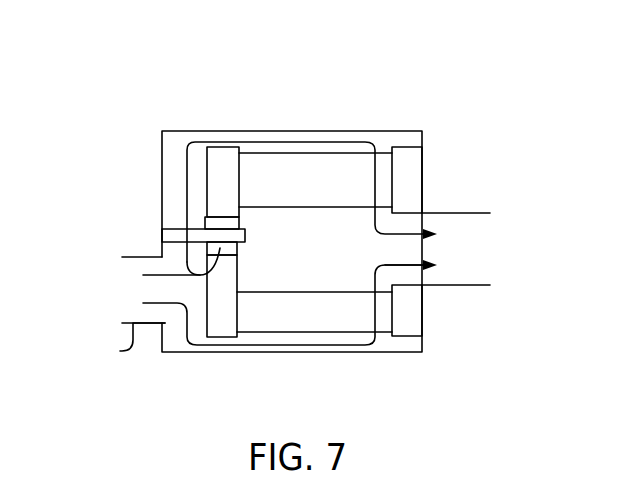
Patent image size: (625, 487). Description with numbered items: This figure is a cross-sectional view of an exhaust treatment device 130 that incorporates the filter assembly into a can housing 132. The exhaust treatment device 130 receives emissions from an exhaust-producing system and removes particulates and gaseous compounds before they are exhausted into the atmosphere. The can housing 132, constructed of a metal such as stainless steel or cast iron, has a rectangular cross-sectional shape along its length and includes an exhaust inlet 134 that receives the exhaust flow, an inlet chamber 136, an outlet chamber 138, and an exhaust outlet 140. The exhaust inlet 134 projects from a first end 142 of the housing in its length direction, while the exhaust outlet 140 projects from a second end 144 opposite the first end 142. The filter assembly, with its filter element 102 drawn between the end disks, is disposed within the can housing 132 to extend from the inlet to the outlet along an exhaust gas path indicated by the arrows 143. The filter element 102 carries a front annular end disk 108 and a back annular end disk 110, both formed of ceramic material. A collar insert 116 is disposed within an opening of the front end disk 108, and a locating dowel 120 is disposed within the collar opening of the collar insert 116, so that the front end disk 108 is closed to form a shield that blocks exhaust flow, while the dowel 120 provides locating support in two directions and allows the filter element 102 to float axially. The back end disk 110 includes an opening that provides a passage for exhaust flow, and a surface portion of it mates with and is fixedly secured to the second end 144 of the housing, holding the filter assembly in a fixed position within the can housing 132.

The exhaust treatment device 130 is at (181, 80).
The can housing 132 is at (168, 131).
The arrows 143 is at (218, 132).
The heat exchanger core 102 is at (345, 174).
The front annular end disk 108 is at (222, 184).
The locating dowel 120 is at (173, 235).
The collar insert 116 is at (185, 277).
The inlet chamber 136 is at (103, 294).
The exhaust inlet 134 is at (121, 351).
The first end of the housing 142 is at (168, 353).
The second end of the housing 144 is at (412, 353).
The exhaust outlet 140 is at (458, 215).
The outlet chamber 138 is at (472, 262).
The back annular end disk 110 is at (405, 312).